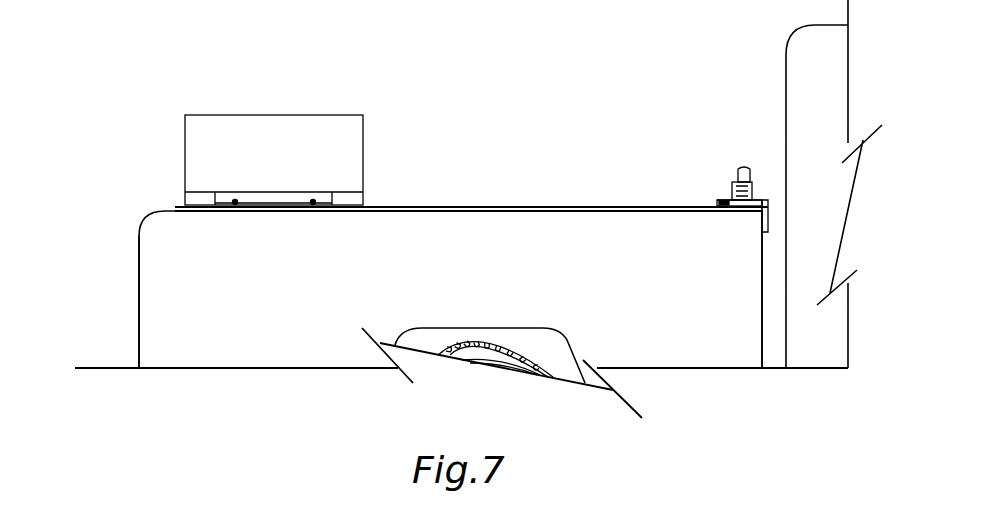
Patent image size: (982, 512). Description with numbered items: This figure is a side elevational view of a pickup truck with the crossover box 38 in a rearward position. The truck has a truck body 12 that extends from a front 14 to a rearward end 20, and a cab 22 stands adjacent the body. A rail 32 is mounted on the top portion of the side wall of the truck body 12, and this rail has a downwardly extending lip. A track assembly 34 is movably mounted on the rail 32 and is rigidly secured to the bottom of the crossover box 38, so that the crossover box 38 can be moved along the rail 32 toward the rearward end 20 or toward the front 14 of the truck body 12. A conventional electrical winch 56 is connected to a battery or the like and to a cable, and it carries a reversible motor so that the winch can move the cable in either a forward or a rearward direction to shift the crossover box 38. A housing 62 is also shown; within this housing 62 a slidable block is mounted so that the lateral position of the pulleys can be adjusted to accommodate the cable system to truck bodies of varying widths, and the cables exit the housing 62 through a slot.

The truck body 12 is at (460, 272).
The front 14 is at (762, 266).
The rearward end 20 is at (139, 288).
The cab 22 is at (786, 95).
The rail 32 is at (421, 207).
The track assembly 34 is at (262, 192).
The crossover box 38 is at (271, 115).
The electrical winch 56 is at (738, 166).
The housing 62 is at (764, 190).